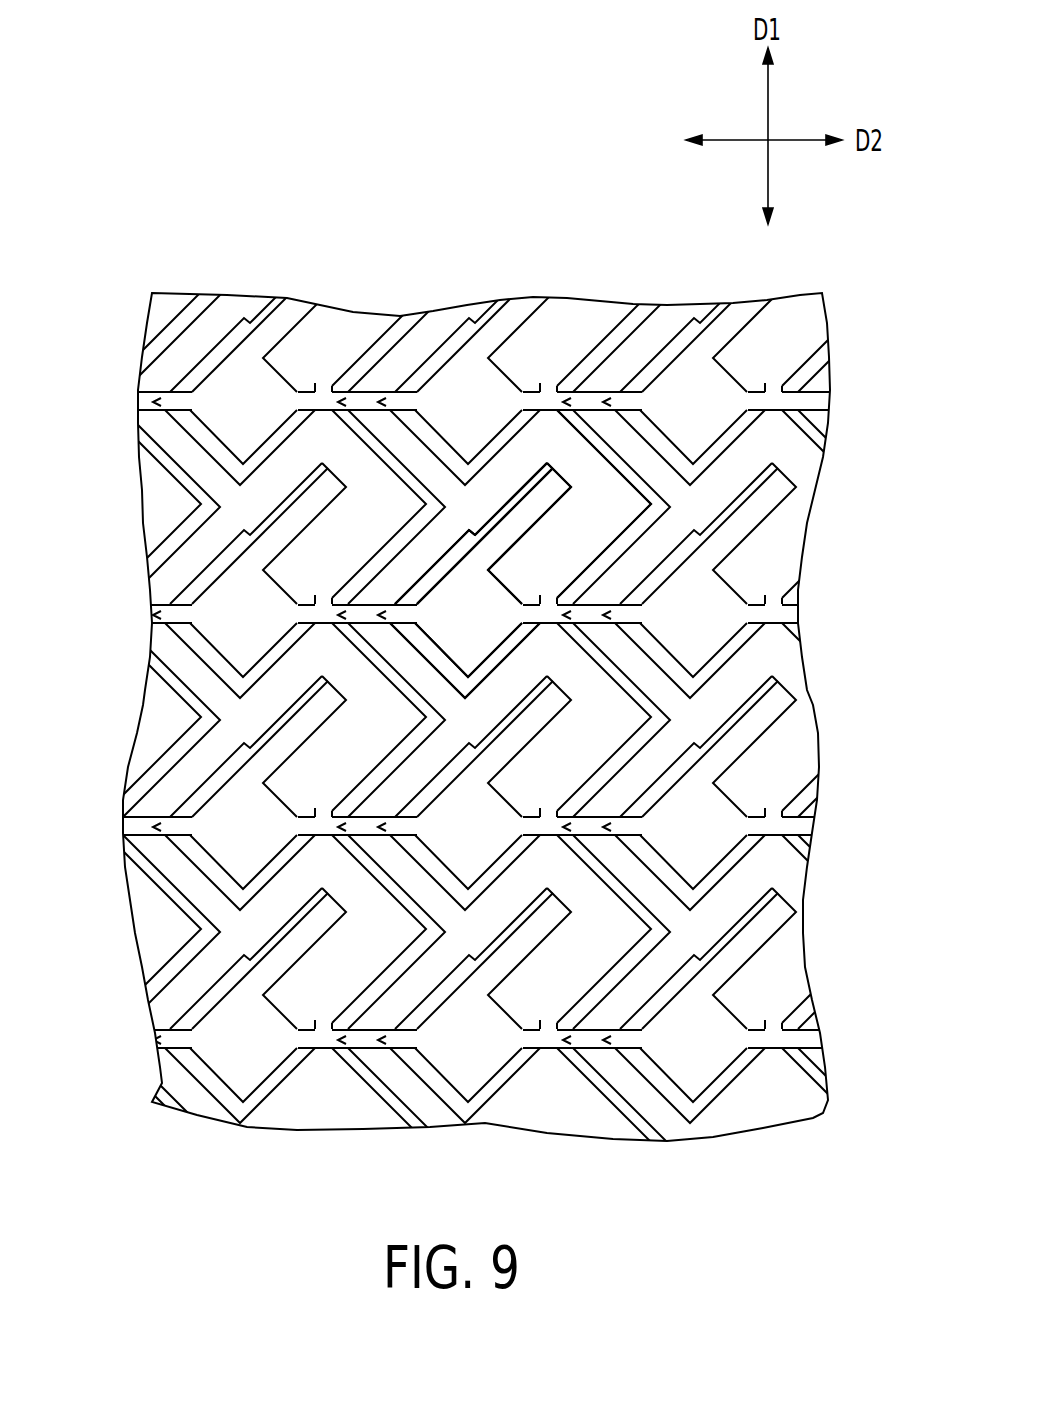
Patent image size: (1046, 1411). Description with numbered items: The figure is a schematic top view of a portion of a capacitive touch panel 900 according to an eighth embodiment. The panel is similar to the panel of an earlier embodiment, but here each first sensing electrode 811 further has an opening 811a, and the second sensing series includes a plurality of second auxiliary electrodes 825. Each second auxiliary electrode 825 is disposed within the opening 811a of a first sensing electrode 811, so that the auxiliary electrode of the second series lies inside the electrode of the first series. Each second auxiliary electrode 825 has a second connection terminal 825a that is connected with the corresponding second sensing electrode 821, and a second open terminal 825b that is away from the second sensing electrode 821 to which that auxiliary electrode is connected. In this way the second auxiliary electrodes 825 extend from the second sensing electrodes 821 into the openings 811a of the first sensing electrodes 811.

The capacitive touch panel 900 is at (885, 1184).
The first sensing electrode 811 is at (603, 515).
The opening 811a is at (556, 499).
The second sensing electrode 821 is at (462, 642).
The second auxiliary electrode 825 is at (518, 523).
The second connection terminal 825a is at (485, 557).
The second open terminal 825b is at (533, 497).